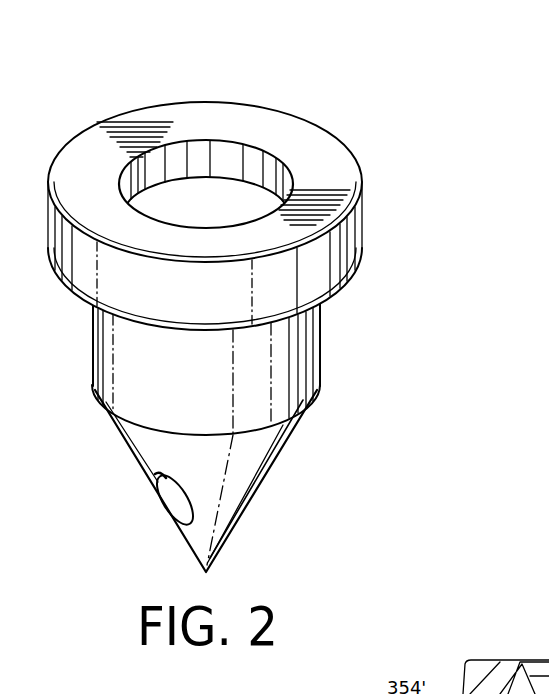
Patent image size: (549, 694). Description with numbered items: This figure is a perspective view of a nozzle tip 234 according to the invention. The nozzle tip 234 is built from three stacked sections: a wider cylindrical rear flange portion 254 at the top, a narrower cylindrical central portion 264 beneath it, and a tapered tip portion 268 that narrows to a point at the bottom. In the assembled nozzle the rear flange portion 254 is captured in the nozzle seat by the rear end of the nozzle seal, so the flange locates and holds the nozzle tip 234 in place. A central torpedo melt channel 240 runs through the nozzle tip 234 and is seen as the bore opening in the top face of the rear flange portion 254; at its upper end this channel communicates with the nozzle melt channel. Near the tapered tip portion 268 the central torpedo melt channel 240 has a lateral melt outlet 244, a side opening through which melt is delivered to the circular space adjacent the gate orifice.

The nozzle tip 234 is at (304, 48).
The central torpedo melt channel 240 is at (227, 195).
The rear flange portion 254 is at (335, 242).
The cylindrical central portion 264 is at (320, 347).
The tapered tip portion 268 is at (240, 463).
The lateral melt outlet 244 is at (170, 503).